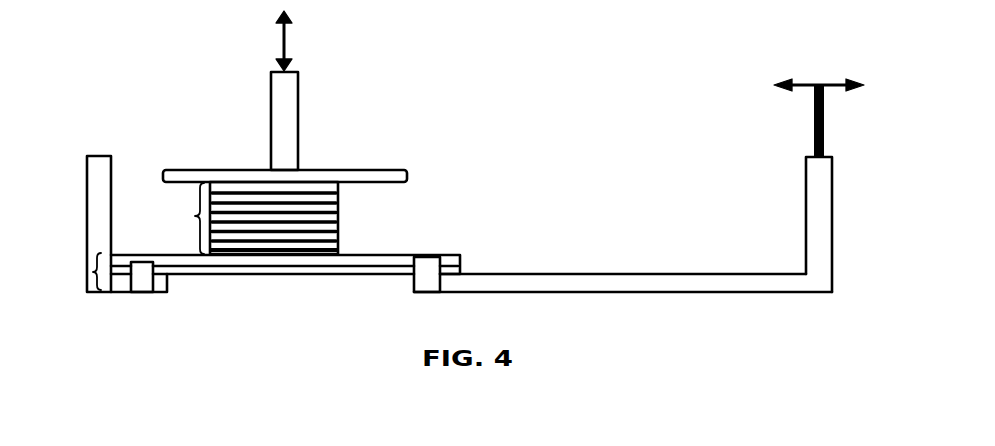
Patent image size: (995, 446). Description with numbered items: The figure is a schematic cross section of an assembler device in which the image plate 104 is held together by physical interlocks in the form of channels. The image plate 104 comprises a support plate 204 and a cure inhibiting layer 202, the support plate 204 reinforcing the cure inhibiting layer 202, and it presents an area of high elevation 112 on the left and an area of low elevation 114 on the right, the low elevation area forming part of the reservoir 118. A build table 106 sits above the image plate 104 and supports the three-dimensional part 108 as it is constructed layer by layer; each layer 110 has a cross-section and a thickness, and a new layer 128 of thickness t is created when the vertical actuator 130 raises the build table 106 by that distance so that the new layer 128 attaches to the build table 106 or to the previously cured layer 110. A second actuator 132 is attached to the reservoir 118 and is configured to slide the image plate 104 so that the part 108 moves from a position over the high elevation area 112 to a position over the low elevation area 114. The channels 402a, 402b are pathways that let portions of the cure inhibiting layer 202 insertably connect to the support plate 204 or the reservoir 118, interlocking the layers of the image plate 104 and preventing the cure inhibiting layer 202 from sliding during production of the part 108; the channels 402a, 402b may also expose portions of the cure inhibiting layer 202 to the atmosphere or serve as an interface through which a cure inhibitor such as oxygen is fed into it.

The image plate 104 is at (92, 272).
The build table 106 is at (360, 170).
The three-dimensional part 108 is at (194, 216).
The layer 110 is at (338, 210).
The area of high elevation 112 is at (457, 305).
The area of low elevation 114 is at (472, 305).
The reservoir 118 is at (818, 223).
The new layer 128 is at (338, 249).
The vertical actuator 130 is at (287, 44).
The actuator 132 is at (819, 142).
The cure inhibiting layer 202 is at (173, 260).
The support plate 204 is at (165, 268).
The channel 402a is at (138, 277).
The channel 402b is at (427, 282).